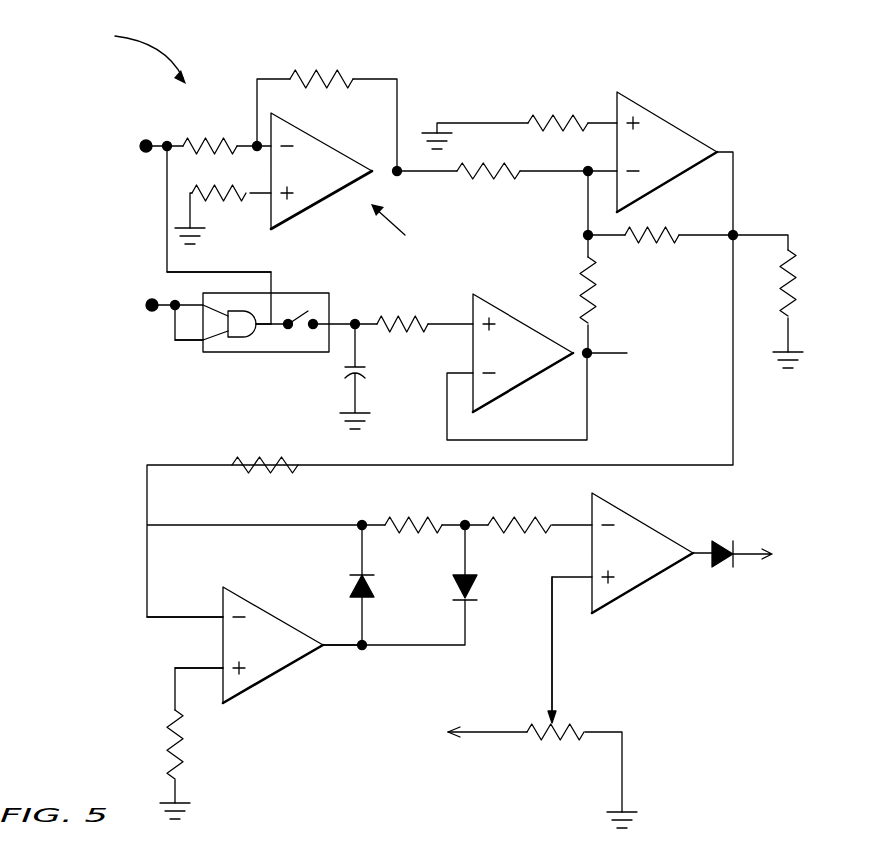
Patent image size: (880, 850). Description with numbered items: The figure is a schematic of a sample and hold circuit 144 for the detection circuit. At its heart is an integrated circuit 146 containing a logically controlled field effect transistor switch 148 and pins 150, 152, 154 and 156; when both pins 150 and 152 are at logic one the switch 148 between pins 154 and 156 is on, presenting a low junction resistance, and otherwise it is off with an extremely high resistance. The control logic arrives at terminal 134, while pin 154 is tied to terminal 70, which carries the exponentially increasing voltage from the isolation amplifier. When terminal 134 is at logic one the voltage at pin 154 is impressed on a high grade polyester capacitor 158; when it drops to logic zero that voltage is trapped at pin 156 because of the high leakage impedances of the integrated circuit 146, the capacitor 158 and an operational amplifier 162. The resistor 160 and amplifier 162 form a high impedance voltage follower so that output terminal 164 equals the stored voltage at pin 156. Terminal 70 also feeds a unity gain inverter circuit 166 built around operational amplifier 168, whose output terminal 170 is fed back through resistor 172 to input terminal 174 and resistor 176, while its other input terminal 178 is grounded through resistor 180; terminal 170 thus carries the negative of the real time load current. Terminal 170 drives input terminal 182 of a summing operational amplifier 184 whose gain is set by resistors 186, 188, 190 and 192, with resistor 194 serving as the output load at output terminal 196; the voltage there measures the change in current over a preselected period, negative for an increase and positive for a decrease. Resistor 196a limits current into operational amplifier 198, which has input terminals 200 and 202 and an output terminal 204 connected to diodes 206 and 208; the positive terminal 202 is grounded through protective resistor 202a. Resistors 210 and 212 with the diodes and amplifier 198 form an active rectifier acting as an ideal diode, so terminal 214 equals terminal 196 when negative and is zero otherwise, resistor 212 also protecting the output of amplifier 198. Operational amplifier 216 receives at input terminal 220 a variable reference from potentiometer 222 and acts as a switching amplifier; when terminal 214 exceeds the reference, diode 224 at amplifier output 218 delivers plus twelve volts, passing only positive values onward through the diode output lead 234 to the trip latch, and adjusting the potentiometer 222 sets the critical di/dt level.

The sample and hold circuit 144 is at (131, 53).
The terminal 70 is at (143, 143).
The resistor 176 is at (190, 140).
The input terminal 174 is at (255, 144).
The resistor 172 is at (323, 76).
The input terminal 178 is at (270, 190).
The resistor 180 is at (210, 198).
The operational amplifier 168 is at (313, 208).
The output terminal 170 is at (398, 173).
The unity gain inverter circuit 166 is at (397, 230).
The resistor 190 is at (533, 118).
The summing operational amplifier 184 is at (672, 118).
The input terminal 182 is at (587, 170).
The resistor 186 is at (487, 180).
The output terminal 196 is at (735, 233).
The resistor 192 is at (655, 241).
The resistor 188 is at (593, 293).
The resistor 194 is at (797, 280).
The pin 150 is at (203, 305).
The terminal 134 is at (145, 305).
The pin 152 is at (203, 341).
The integrated circuit 146 is at (230, 352).
The pin 154 is at (265, 318).
The field effect transistor switch 148 is at (296, 317).
The pin 156 is at (318, 322).
The resistor 160 is at (393, 318).
The capacitor 158 is at (361, 367).
The operational amplifier 162 is at (517, 320).
The output terminal 164 is at (592, 353).
The resistor 196a is at (268, 460).
The resistor 210 is at (408, 522).
The terminal 214 is at (465, 521).
The resistor 212 is at (518, 522).
The operational amplifier 216 is at (642, 522).
The amplifier output 218 is at (695, 552).
The diode cathode 234 is at (738, 552).
The diode 224 is at (745, 557).
The input terminal 220 is at (590, 577).
The diode 206 is at (350, 588).
The diode 208 is at (458, 582).
The input terminal 200 is at (222, 617).
The positive terminal 202 is at (222, 667).
The output terminal 204 is at (325, 648).
The operational amplifier 198 is at (258, 686).
The resistor 202a is at (186, 742).
The potentiometer 222 is at (535, 735).